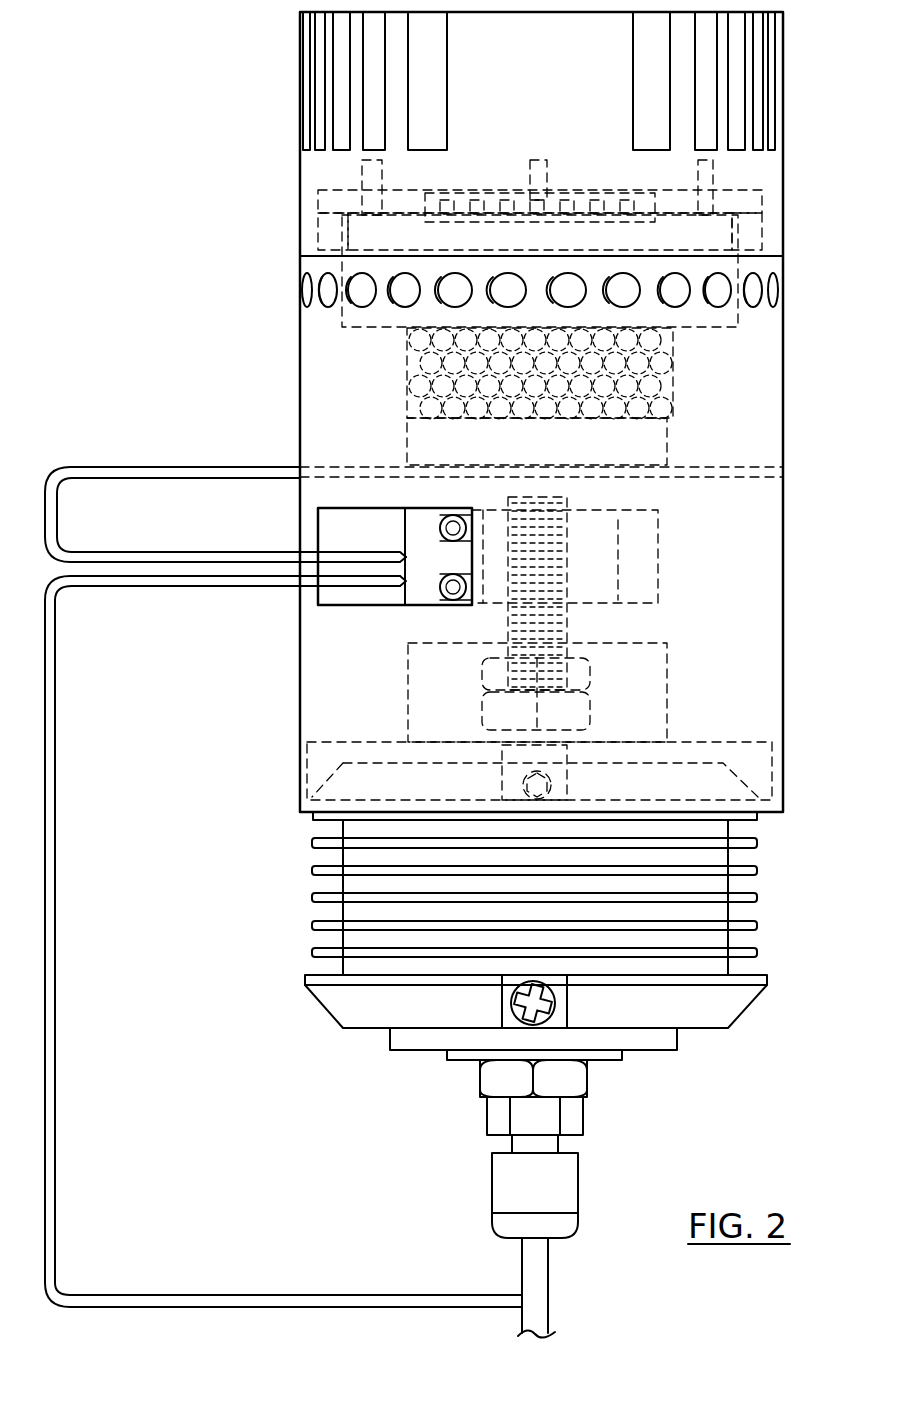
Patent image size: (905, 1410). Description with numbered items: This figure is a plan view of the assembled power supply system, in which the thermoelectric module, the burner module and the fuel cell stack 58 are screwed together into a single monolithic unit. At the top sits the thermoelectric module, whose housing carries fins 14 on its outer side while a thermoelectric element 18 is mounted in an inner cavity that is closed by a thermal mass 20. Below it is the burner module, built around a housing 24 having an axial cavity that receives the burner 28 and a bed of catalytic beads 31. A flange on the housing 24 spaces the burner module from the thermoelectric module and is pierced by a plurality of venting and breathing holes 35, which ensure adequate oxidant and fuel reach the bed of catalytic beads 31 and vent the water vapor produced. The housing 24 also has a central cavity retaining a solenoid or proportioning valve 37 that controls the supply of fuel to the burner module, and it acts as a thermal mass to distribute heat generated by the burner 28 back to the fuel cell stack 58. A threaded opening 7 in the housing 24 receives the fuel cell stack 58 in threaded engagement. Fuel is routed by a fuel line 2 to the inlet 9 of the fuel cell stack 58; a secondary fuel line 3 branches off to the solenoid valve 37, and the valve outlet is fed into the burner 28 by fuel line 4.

The fuel line 2 is at (545, 1315).
The secondary fuel line 3 is at (57, 780).
The fuel line 4 is at (148, 467).
The threaded opening 7 is at (590, 493).
The inlet 9 is at (510, 1184).
The fins 14 is at (607, 86).
The thermoelectric element 18 is at (420, 205).
The thermal mass 20 is at (762, 232).
The housing 24 is at (758, 567).
The burner 28 is at (407, 437).
The bed of catalytic beads 31 is at (407, 368).
The venting and breathing holes 35 is at (758, 290).
The solenoid or proportioning valve 37 is at (425, 583).
The fuel cell stack 58 is at (730, 884).